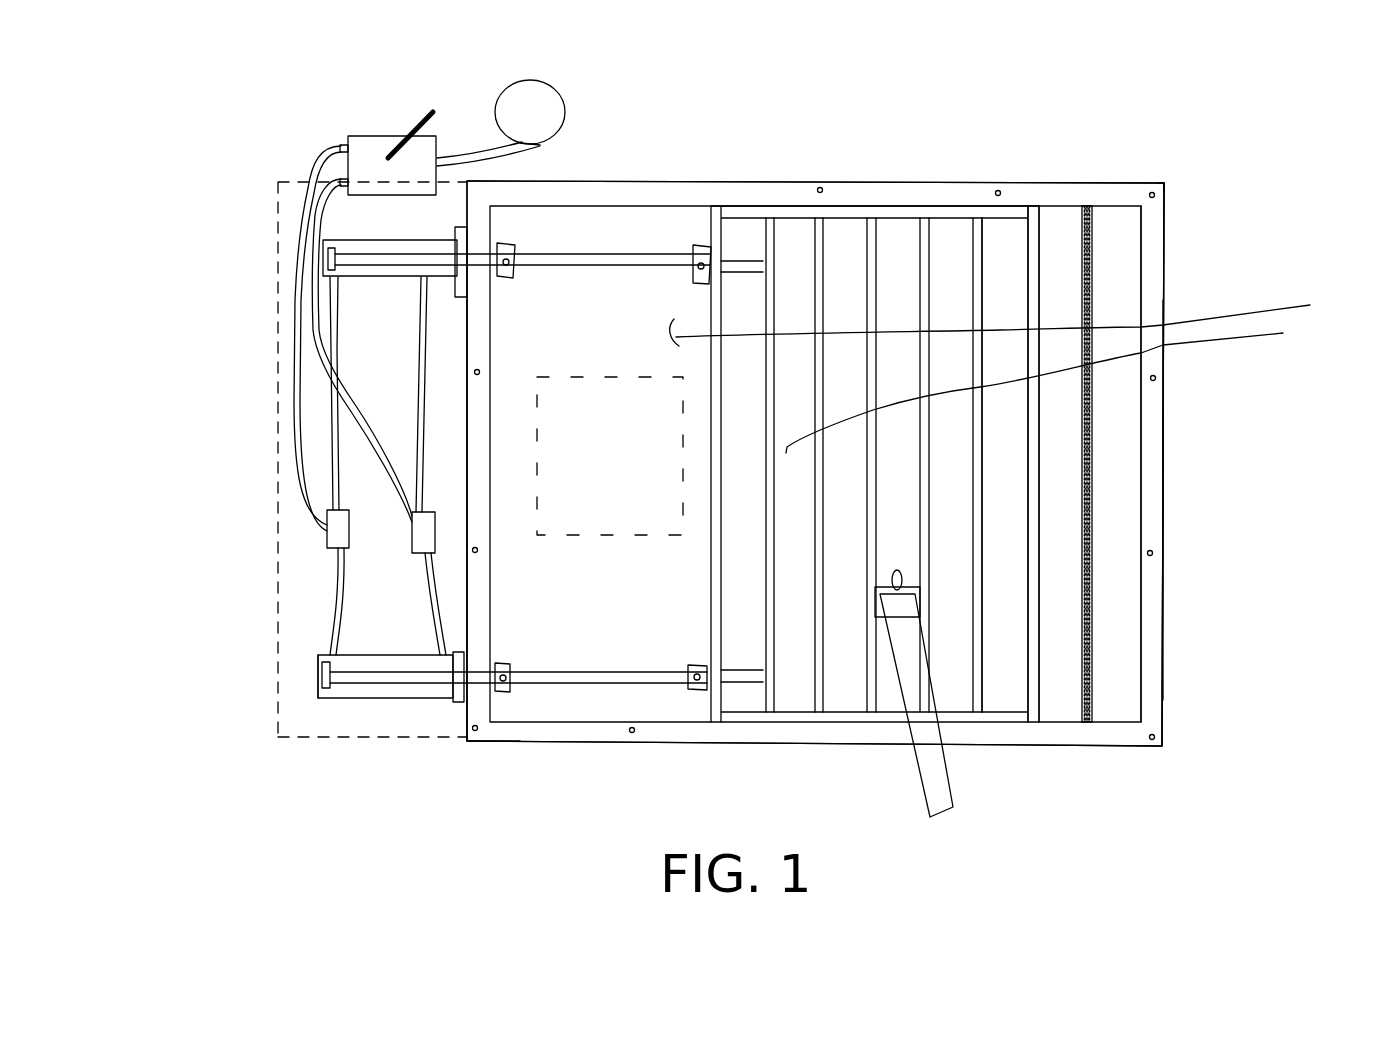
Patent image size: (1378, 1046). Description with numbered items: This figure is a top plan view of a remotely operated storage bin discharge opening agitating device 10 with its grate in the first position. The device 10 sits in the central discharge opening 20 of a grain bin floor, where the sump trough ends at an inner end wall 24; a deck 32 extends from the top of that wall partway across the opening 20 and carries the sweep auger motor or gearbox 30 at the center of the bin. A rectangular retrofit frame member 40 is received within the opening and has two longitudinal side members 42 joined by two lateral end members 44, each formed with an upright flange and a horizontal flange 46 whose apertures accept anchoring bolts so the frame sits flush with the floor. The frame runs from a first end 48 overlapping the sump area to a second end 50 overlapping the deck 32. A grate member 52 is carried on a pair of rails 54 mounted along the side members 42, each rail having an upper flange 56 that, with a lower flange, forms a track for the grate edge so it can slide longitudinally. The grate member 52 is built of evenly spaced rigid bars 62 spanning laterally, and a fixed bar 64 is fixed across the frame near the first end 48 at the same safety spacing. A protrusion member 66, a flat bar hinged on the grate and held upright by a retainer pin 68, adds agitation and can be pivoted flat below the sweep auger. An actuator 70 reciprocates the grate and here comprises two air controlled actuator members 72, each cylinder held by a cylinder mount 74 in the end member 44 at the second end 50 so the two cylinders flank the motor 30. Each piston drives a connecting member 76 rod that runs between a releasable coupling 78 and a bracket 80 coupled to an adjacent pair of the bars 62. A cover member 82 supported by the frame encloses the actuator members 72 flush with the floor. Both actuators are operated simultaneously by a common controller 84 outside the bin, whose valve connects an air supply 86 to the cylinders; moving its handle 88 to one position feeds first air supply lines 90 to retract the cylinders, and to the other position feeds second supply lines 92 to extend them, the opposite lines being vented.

The storage bin discharge opening agitating device 10 is at (976, 100).
The central discharge opening 20 is at (800, 500).
The inner end wall 24 is at (1046, 465).
The motor or gearbox 30 is at (632, 537).
The deck 32 is at (1013, 313).
The retrofit frame member 40 is at (1094, 186).
The side members 42 is at (667, 203).
The end members 44 is at (466, 600).
The horizontal flange 46 is at (1169, 413).
The first end 48 is at (1165, 181).
The second end 50 is at (462, 770).
The grate member 52 is at (1000, 320).
The rails 54 is at (846, 211).
The upper flange 56 is at (903, 215).
The rigid bars 62 is at (982, 597).
The fixed bar 64 is at (1092, 553).
The protrusion member 66 is at (955, 783).
The retainer pin 68 is at (899, 573).
The actuator 70 is at (330, 762).
The actuator members 72 is at (345, 238).
The cylinder mount 74 is at (460, 235).
The connecting member 76 is at (629, 262).
The releasable coupling 78 is at (334, 346).
The bracket 80 is at (742, 261).
The cover member 82 is at (276, 650).
The common controller 84 is at (369, 147).
The air supply 86 is at (519, 86).
The handle 88 is at (426, 108).
The first air supply lines 90 is at (420, 478).
The second supply lines 92 is at (331, 437).